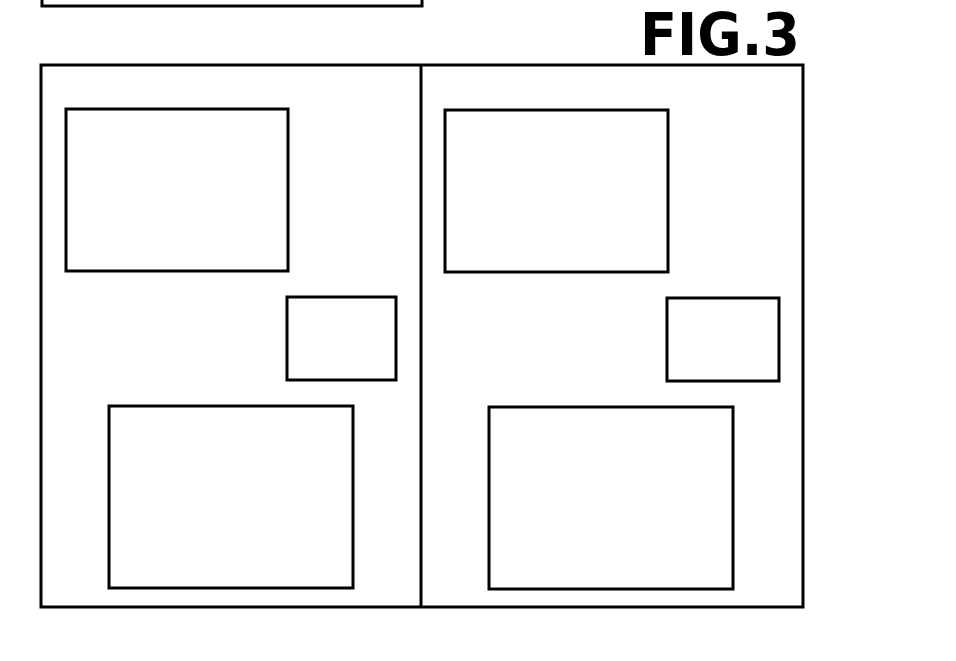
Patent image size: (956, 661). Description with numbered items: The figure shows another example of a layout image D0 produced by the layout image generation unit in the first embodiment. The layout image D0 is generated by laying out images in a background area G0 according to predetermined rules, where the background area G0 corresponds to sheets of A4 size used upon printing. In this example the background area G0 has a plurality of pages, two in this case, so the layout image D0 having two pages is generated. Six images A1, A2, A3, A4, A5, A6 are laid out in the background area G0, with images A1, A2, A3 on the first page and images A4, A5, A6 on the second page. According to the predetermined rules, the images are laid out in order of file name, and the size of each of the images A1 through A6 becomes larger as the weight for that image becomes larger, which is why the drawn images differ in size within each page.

The layout image D0 is at (803, 86).
The background area G0 is at (793, 201).
The image A1 is at (177, 190).
The image A2 is at (341, 338).
The image A3 is at (231, 497).
The image A4 is at (556, 191).
The image A5 is at (723, 339).
The image A6 is at (611, 498).